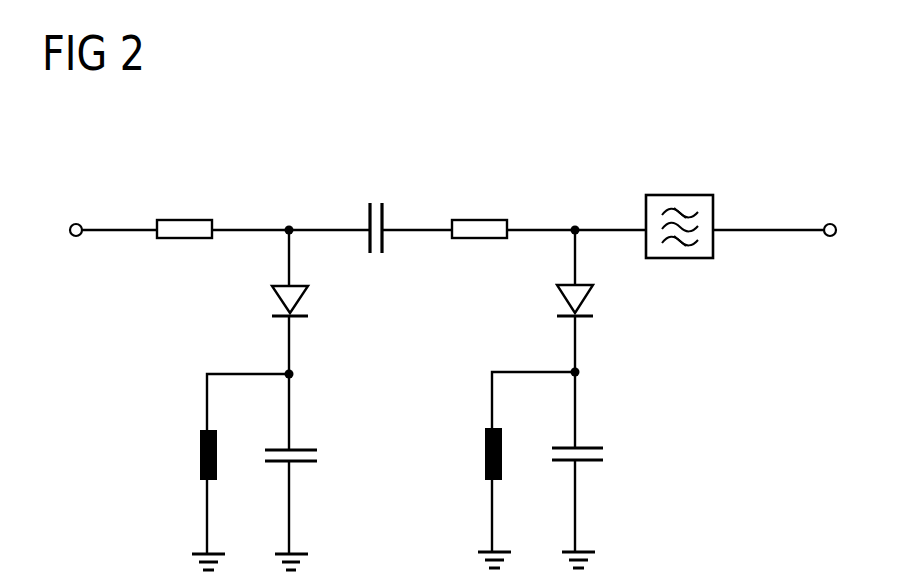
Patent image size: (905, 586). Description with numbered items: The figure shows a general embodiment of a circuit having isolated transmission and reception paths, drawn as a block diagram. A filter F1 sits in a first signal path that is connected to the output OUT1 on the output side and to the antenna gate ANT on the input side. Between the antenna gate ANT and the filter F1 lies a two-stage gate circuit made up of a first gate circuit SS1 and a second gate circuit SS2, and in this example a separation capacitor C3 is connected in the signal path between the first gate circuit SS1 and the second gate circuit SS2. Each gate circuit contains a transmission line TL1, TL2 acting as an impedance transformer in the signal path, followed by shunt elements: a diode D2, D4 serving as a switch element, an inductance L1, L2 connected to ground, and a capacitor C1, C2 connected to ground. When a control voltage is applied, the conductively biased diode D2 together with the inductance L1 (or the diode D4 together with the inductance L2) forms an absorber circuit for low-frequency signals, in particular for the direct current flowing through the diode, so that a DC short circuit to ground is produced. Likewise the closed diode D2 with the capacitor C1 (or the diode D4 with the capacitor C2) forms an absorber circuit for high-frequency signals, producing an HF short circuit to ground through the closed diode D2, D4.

The antenna gate ANT is at (76, 222).
The transmission line TL1 is at (186, 220).
The transmission line TL2 is at (481, 220).
The separation capacitor C3 is at (376, 203).
The filter F1 is at (676, 195).
The output OUT1 is at (831, 223).
The first gate circuit SS1 is at (272, 136).
The second gate circuit SS2 is at (554, 136).
The diode D2 is at (282, 308).
The diode D4 is at (566, 305).
The inductance L1 is at (200, 457).
The inductance L2 is at (485, 455).
The capacitor C1 is at (302, 448).
The capacitor C2 is at (589, 447).